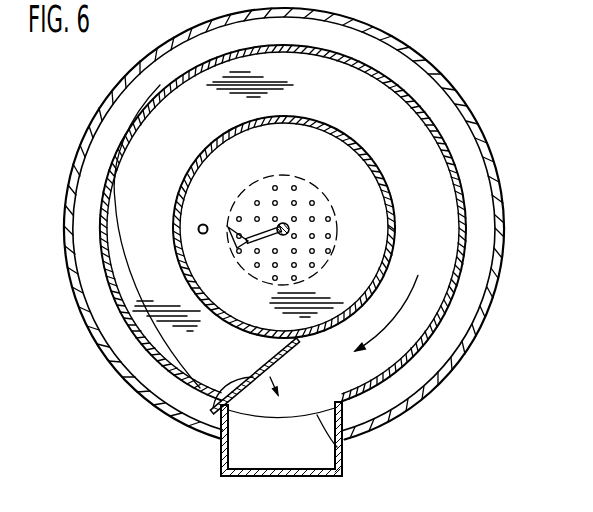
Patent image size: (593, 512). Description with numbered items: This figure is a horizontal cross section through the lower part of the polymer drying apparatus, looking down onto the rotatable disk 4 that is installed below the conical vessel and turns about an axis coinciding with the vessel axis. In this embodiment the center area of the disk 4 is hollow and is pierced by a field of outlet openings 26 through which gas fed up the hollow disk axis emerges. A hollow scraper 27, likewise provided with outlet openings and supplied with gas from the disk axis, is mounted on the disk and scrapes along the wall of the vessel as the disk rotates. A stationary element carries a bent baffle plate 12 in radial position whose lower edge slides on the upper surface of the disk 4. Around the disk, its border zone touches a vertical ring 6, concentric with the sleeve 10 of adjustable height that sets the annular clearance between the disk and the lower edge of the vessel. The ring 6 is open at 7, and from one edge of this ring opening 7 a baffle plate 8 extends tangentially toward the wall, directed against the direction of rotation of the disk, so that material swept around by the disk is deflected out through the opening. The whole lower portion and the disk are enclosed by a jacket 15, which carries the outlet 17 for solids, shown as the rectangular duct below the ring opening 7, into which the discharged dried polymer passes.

The jacket 15 is at (453, 86).
The rotatable disk 4 is at (408, 124).
The vertical ring 6 is at (108, 167).
The sleeve 10 is at (388, 190).
The hollow scraper 27 is at (197, 228).
The outlet openings 26 is at (312, 264).
The bent baffle plate 12 is at (244, 242).
The baffle plate 8 is at (213, 392).
The outlet for solids 17 is at (220, 456).
The ring opening 7 is at (337, 447).